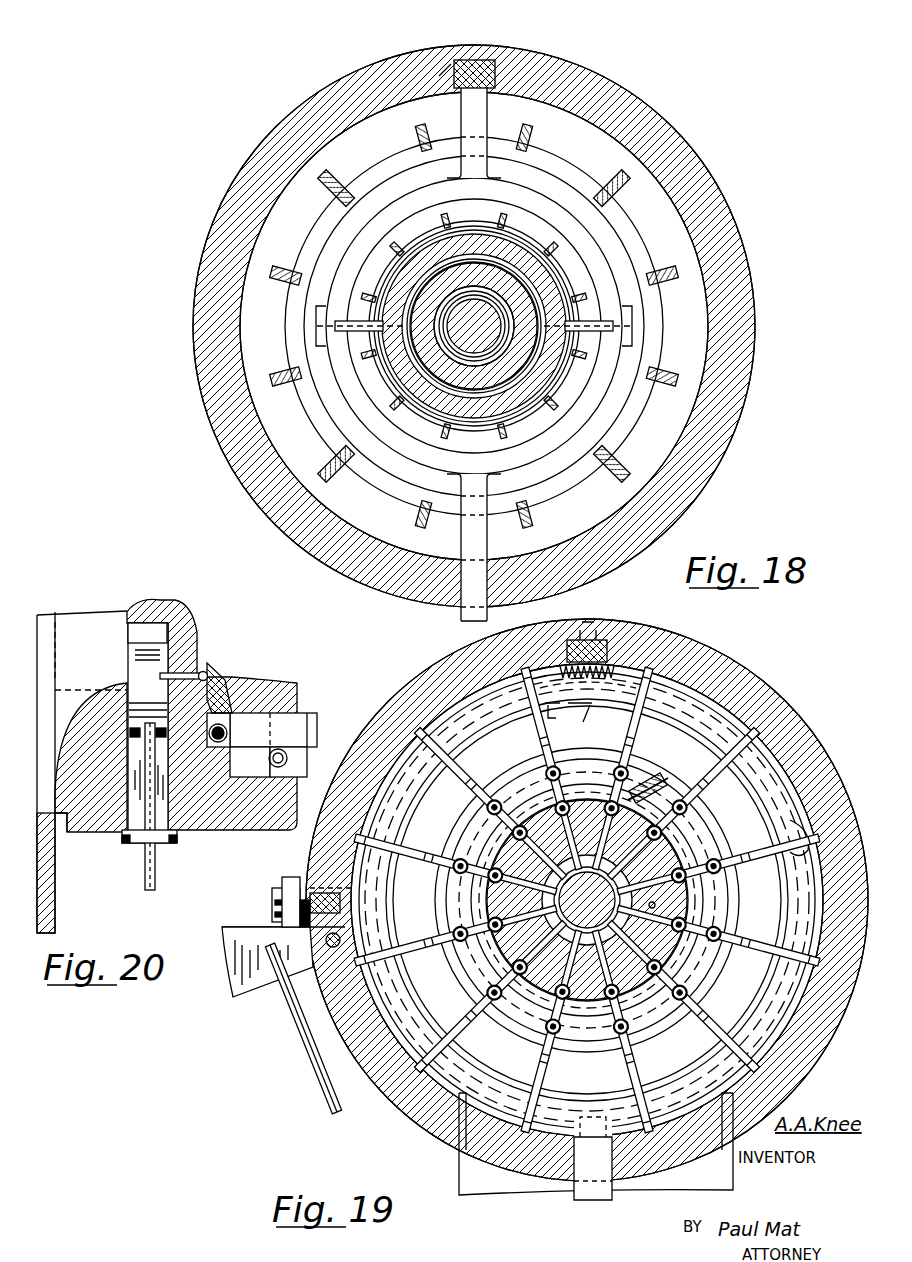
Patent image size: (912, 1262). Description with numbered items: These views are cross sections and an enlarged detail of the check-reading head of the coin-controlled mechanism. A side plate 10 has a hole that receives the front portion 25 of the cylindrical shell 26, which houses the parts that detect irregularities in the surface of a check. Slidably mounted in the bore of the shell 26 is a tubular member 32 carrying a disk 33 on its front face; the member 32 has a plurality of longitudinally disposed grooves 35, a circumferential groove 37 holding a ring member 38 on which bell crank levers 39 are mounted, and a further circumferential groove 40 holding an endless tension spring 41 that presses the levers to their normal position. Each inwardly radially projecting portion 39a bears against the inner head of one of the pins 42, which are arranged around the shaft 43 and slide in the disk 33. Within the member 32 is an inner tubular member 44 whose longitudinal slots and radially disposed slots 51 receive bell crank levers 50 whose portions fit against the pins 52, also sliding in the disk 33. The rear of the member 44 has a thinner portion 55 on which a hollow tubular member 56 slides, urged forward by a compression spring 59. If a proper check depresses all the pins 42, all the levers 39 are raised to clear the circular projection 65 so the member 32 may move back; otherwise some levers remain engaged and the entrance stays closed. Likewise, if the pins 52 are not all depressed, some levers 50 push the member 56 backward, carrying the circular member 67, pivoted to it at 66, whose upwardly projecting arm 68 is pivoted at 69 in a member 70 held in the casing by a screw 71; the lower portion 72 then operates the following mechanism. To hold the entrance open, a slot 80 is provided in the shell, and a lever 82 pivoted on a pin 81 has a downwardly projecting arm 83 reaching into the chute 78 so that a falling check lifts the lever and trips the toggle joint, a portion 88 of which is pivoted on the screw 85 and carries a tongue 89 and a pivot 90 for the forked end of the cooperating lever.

In FIG. 20, the side plate 10 is at (50, 900).
In FIG. 20, the front portion of the cylindrical shell 25 is at (105, 835).
In FIG. 18, the cylindrical shell 26 is at (620, 93).
In FIG. 20, the cylindrical shell 26 is at (93, 832).
In FIG. 19, the tubular member 32 is at (662, 737).
In FIG. 20, the tubular member 32 is at (289, 680).
In FIG. 20, the disk 33 is at (185, 750).
In FIG. 19, the longitudinally disposed grooves 35 is at (522, 681).
In FIG. 20, the circumferential groove 37 is at (217, 745).
In FIG. 19, the ring member 38 is at (553, 705).
In FIG. 20, the ring member 38 is at (227, 734).
In FIG. 18, the bell crank levers 39 is at (345, 183).
In FIG. 19, the bell crank levers 39 is at (836, 846).
In FIG. 20, the bell crank levers 39 is at (318, 712).
In FIG. 19, the inwardly radially projecting portion 39a is at (675, 788).
In FIG. 20, the inwardly radially projecting portion 39a is at (223, 668).
In FIG. 20, the circumferential groove 40 is at (280, 772).
In FIG. 19, the endless tension spring 41 is at (688, 637).
In FIG. 20, the endless tension spring 41 is at (300, 760).
In FIG. 19, the pins 42 is at (468, 866).
In FIG. 20, the pins 42 is at (206, 660).
In FIG. 18, the shaft 43 is at (432, 418).
In FIG. 19, the shaft 43 is at (583, 978).
In FIG. 19, the tubular member 44 is at (642, 770).
In FIG. 18, the bell crank levers 50 is at (398, 246).
In FIG. 19, the bell crank levers 50 is at (562, 801).
In FIG. 19, the radially disposed slots 51 is at (655, 905).
In FIG. 19, the pins 52 is at (522, 802).
In FIG. 18, the thinner portion 55 is at (503, 348).
In FIG. 18, the hollow tubular member 56 is at (512, 252).
In FIG. 18, the compression spring 59 is at (452, 256).
In FIG. 18, the circular projection 65 is at (558, 165).
In FIG. 18, the pivotal connection 66 is at (325, 322).
In FIG. 18, the circular member 67 is at (582, 236).
In FIG. 18, the upwardly projecting arm 68 is at (487, 126).
In FIG. 18, the pivot 69 is at (447, 68).
In FIG. 18, the member 70 is at (493, 62).
In FIG. 19, the member 70 is at (606, 641).
In FIG. 19, the screw 71 is at (591, 638).
In FIG. 18, the lower portion of circular member 72 is at (490, 542).
In FIG. 19, the lower portion of circular member 72 is at (590, 1200).
In FIG. 19, the chute 78 is at (500, 1178).
In FIG. 20, the chute 78 is at (140, 835).
In FIG. 20, the slot 80 is at (133, 614).
In FIG. 20, the pin 81 is at (116, 688).
In FIG. 20, the lever 82 is at (130, 660).
In FIG. 20, the downwardly projecting arm 83 is at (158, 863).
In FIG. 20, the pin or screw 85 is at (275, 896).
In FIG. 20, the toggle joint member 88 is at (282, 890).
In FIG. 20, the tongue 89 is at (291, 880).
In FIG. 20, the pivot 90 is at (272, 906).